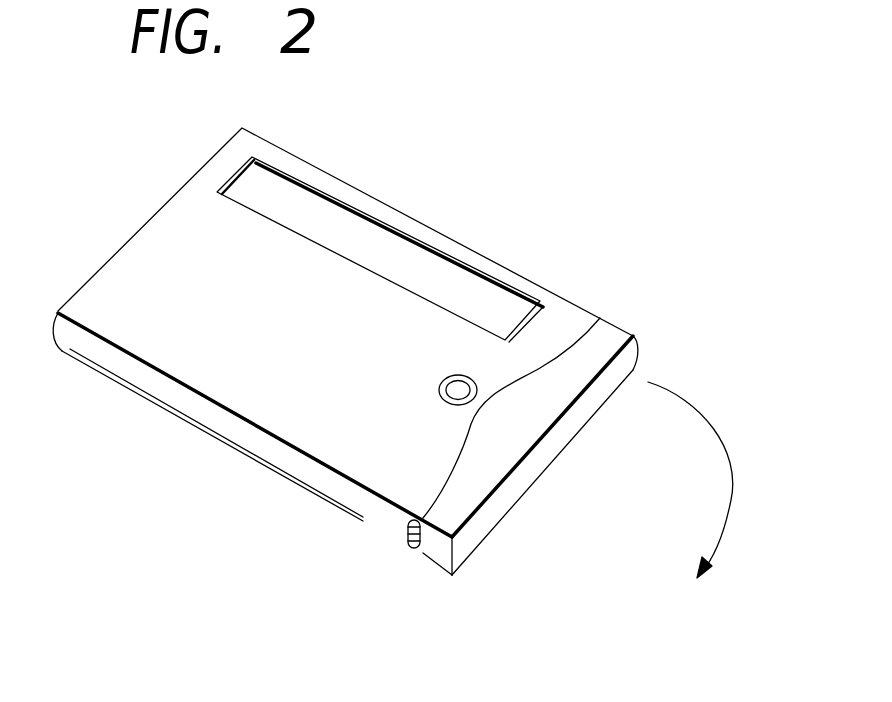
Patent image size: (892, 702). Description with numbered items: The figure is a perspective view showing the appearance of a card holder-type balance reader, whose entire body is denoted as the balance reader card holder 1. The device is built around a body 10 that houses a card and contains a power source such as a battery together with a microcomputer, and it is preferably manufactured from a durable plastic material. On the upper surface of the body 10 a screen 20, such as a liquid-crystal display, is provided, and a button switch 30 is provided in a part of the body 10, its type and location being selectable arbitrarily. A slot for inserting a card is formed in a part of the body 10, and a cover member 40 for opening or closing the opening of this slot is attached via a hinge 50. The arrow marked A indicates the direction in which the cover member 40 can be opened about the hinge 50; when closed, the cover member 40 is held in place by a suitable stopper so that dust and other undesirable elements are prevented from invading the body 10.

The balance reader card holder 1 is at (513, 203).
The body 10 is at (263, 455).
The screen 20 is at (390, 248).
The button switch 30 is at (464, 388).
The cover member 40 is at (523, 483).
The hinge 50 is at (410, 537).